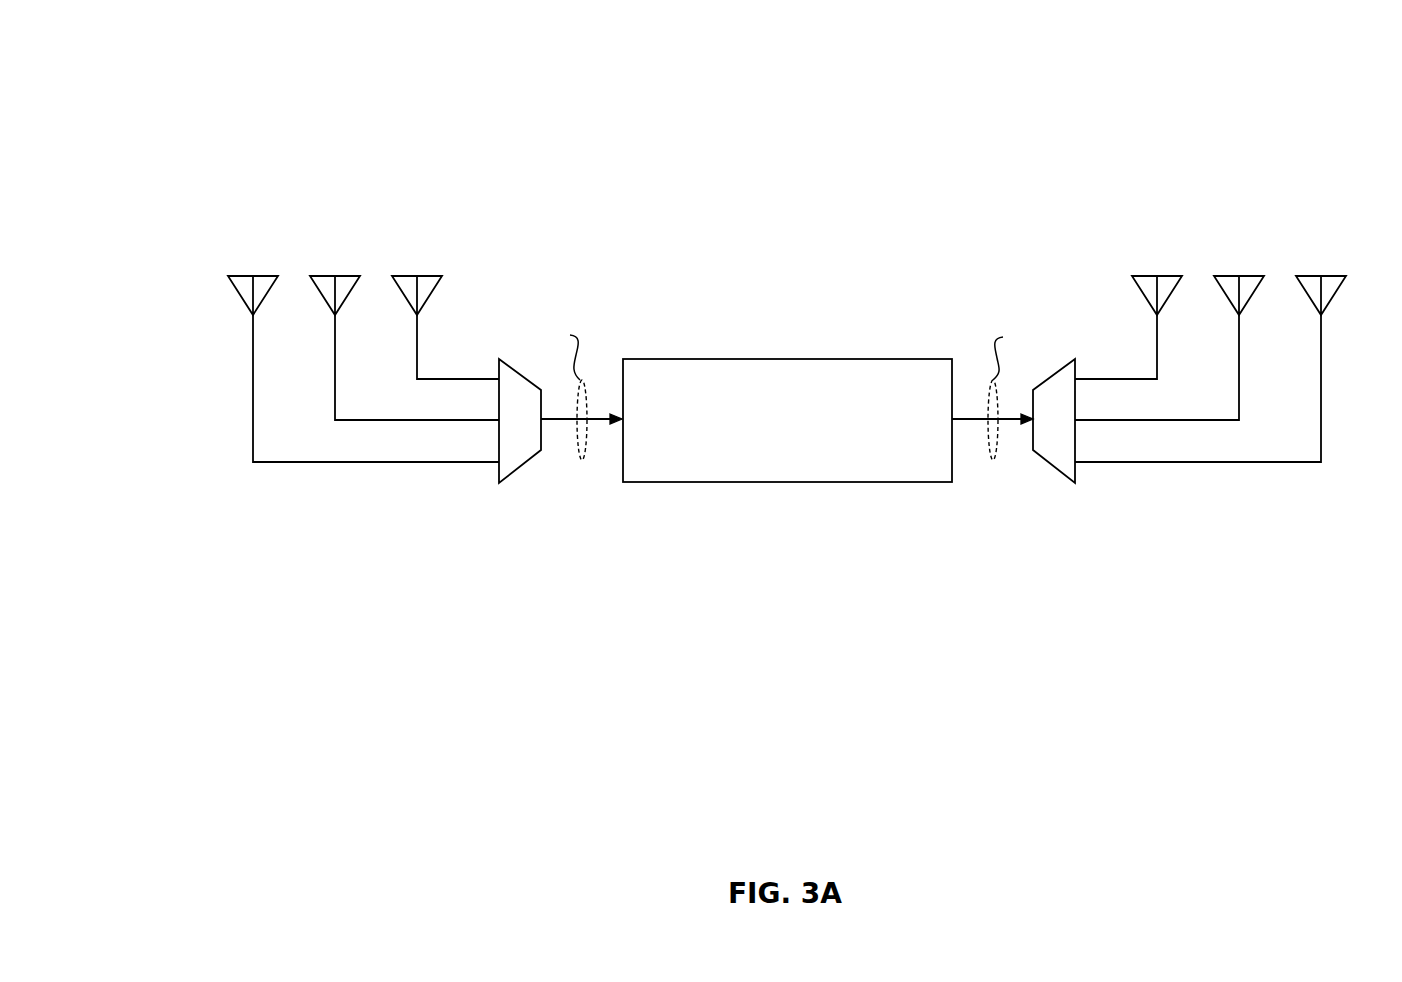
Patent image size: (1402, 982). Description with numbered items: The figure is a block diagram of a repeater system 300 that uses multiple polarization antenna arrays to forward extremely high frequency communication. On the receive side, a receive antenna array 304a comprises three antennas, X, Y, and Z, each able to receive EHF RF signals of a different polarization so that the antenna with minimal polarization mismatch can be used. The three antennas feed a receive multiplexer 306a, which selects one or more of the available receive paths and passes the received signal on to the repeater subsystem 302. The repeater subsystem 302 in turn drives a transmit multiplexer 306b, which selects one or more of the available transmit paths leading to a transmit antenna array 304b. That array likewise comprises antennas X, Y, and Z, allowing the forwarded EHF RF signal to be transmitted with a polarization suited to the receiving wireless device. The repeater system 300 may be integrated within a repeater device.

The repeater system 300 is at (292, 82).
The repeater subsystem 302 is at (791, 359).
The receive antenna array 304a is at (212, 233).
The transmit antenna array 304b is at (1363, 233).
The receive multiplexer 306a is at (523, 467).
The transmit multiplexer 306b is at (1055, 467).